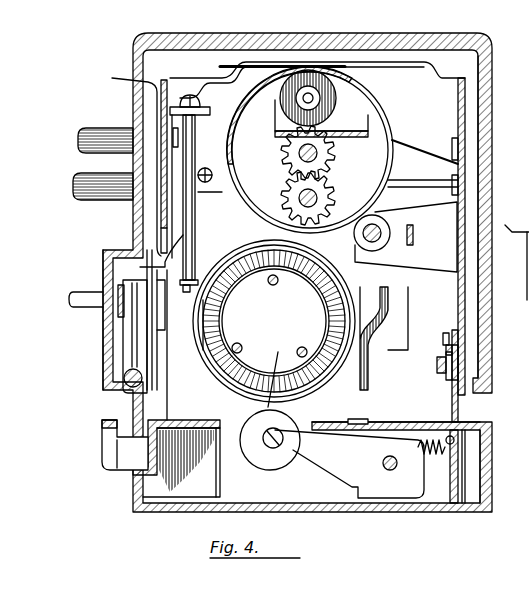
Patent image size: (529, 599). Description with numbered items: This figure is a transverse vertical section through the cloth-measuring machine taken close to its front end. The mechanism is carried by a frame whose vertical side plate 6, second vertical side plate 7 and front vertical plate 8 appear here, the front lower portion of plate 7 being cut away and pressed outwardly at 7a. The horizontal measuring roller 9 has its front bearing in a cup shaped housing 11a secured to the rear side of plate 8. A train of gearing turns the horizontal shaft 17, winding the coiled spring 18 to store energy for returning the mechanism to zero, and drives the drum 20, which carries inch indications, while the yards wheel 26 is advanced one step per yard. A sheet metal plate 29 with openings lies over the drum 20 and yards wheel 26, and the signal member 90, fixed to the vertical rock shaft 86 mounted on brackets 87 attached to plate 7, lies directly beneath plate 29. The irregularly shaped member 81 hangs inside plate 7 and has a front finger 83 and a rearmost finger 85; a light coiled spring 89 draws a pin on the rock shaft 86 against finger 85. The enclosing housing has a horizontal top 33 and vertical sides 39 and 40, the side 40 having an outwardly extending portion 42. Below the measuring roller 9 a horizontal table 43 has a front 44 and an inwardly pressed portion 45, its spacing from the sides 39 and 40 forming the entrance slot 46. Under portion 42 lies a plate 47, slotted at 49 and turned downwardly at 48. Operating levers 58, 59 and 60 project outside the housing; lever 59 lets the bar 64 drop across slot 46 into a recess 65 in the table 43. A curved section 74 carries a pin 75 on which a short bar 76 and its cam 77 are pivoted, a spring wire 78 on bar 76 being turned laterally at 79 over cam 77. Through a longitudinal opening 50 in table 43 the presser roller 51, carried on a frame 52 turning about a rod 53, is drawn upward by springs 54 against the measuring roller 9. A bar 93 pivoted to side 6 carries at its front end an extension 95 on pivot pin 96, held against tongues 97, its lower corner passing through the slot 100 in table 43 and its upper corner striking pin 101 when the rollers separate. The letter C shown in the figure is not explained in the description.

The horizontal top 33 is at (215, 33).
The vertical side 39 is at (491, 168).
The front 44 is at (491, 457).
The front vertical plate 8 is at (528, 136).
The outwardly extending portion 42 is at (103, 268).
The inwardly pressed portion 45 is at (160, 455).
The slot 49 is at (127, 432).
The plate 47 is at (103, 430).
The downwardly turned end 48 is at (118, 460).
The lever 58 is at (87, 133).
The operating lever 59 is at (131, 198).
The operating lever 60 is at (75, 307).
The vertical side 40 is at (123, 161).
The second vertical side plate 7 is at (162, 103).
The sheet metal plate 29 is at (412, 62).
The signal member 90 is at (272, 62).
The drum 20 is at (390, 130).
The yards wheel 26 is at (337, 95).
The light coiled spring 89 is at (200, 186).
The vertical side plate 6 is at (466, 300).
The marking C is at (501, 262).
The coiled spring 18 is at (405, 211).
The horizontal shaft 17 is at (380, 240).
The bar 64 is at (366, 343).
The pin 101 is at (448, 345).
The tongues 97 is at (431, 339).
The pivot pin 96 is at (438, 362).
The bar 93 is at (458, 360).
The extension 95 is at (452, 412).
The horizontal table 43 is at (386, 422).
The recess 65 is at (354, 421).
The entrance slot 46 is at (512, 232).
The curved section 74 is at (178, 300).
The brackets 87 is at (199, 112).
The front finger 83 is at (168, 262).
The vertical rock shaft 86 is at (196, 228).
The irregularly shaped member 81 is at (170, 166).
The rearmost finger 85 is at (188, 255).
The short bar 76 is at (127, 353).
The spring wire 78 is at (130, 335).
The pin 75 is at (117, 298).
The lateral turn 79 is at (143, 258).
The outwardly pressed portion 7a is at (152, 380).
The cam 77 is at (160, 322).
The measuring roller 9 is at (203, 352).
The cup shaped housing 11a is at (283, 385).
The longitudinal opening 50 is at (231, 425).
The presser roller 51 is at (266, 460).
The frame 52 is at (350, 461).
The slot 100 is at (428, 445).
The rod 53 is at (391, 470).
The springs 54 is at (434, 456).